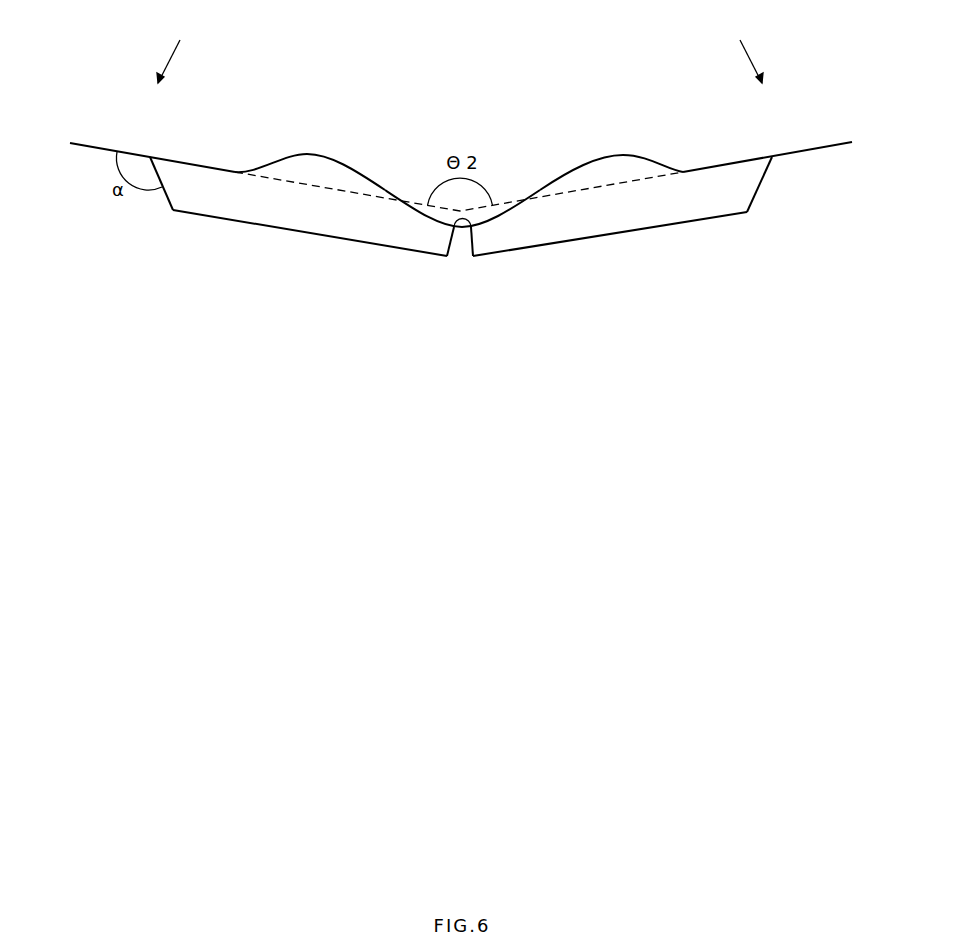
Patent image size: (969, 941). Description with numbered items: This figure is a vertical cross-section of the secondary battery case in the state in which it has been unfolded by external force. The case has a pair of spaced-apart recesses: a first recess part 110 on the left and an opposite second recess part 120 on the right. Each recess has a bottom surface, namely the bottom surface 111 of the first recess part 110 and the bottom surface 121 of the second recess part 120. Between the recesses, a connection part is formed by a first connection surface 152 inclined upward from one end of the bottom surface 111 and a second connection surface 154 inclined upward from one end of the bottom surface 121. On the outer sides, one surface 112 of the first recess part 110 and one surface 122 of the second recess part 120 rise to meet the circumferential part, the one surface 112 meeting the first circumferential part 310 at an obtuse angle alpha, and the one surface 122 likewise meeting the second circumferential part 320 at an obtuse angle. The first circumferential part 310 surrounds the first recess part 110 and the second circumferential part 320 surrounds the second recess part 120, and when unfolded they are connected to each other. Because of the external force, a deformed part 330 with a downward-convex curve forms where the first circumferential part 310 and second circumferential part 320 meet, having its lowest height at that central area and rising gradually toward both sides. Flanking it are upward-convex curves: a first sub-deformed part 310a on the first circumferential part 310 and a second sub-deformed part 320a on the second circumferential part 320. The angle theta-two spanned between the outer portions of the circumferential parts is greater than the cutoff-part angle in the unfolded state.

The first recess part 110 is at (302, 235).
The bottom surface of the first recess part 111 is at (308, 234).
The one surface of the first recess part 112 is at (165, 203).
The second recess part 120 is at (620, 235).
The bottom surface of the second recess part 121 is at (612, 234).
The one surface of the second recess part 122 is at (750, 203).
The first connection surface 152 is at (448, 258).
The second connection surface 154 is at (473, 258).
The first circumferential part 310 is at (98, 147).
The first sub-deformed part 310a is at (307, 153).
The second circumferential part 320 is at (823, 147).
The second sub-deformed part 320a is at (617, 155).
The deformed part 330 is at (487, 228).